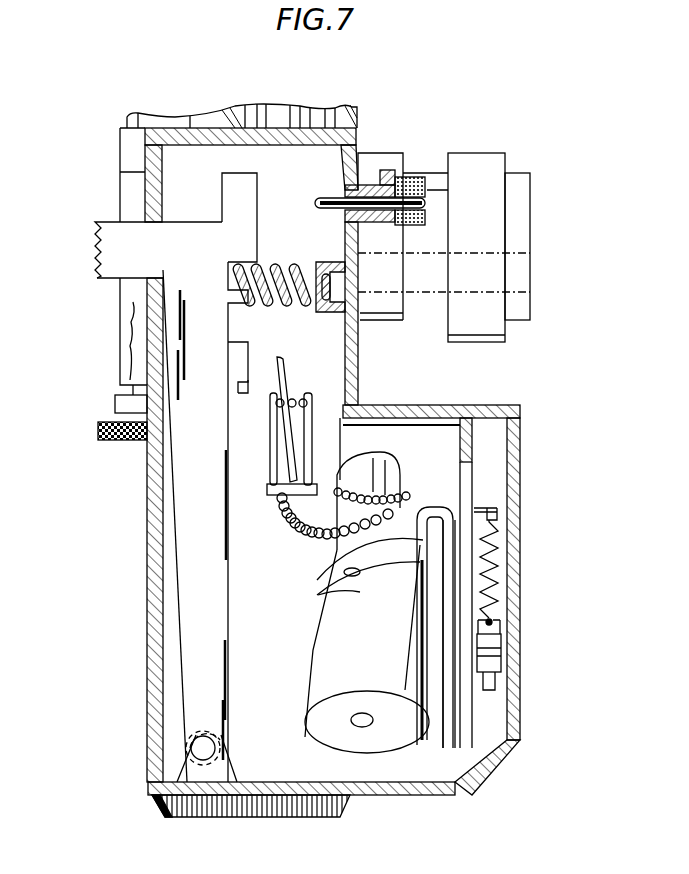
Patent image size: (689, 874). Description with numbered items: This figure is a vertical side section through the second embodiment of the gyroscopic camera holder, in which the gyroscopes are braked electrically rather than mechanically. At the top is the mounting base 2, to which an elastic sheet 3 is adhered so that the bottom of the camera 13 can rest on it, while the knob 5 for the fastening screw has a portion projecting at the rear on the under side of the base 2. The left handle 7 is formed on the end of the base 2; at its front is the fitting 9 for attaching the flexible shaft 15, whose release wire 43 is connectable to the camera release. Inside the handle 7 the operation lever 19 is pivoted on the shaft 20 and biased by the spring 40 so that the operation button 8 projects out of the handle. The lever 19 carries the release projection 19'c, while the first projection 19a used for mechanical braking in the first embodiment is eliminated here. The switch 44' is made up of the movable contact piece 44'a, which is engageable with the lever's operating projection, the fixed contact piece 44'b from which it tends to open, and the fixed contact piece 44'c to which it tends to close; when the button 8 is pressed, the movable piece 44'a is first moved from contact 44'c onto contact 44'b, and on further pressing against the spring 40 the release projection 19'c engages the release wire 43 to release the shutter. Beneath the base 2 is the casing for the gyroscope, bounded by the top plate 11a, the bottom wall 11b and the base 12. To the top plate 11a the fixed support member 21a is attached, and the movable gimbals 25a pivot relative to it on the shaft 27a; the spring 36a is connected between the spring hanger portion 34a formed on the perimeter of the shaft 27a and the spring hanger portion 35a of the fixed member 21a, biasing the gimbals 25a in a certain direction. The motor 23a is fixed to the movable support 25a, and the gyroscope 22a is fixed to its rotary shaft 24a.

The handle 7 is at (288, 140).
The operation button 8 is at (96, 243).
The fitting 9 is at (362, 186).
The flexible shaft 15 is at (410, 178).
The camera 13 is at (472, 172).
The release wire 43 is at (329, 198).
The release projection 19'c is at (260, 206).
The operation lever 19 is at (241, 522).
The first projection 19a is at (246, 396).
The spring 40 is at (303, 268).
The elastic sheet 3 is at (116, 390).
The mounting base 2 is at (115, 403).
The knob 5 is at (110, 441).
The switch 44' is at (359, 313).
The movable contact piece 44'a is at (310, 419).
The fixed contact piece 44'b is at (362, 430).
The fixed contact piece 44'c is at (311, 466).
The top plate 11a is at (447, 415).
The bottom housing wall 11b is at (450, 798).
The base 12 is at (306, 800).
The motor 23a is at (403, 528).
The gyroscope 22a is at (402, 730).
The rotary shaft 24a is at (342, 566).
The fixed support member 21a is at (468, 480).
The movable gimbals 25a is at (455, 712).
The spring hanger portion 35a is at (492, 514).
The spring 36a is at (495, 562).
The spring hanger portion 34a is at (493, 622).
The shaft 27a is at (490, 655).
The shaft 20 is at (220, 762).